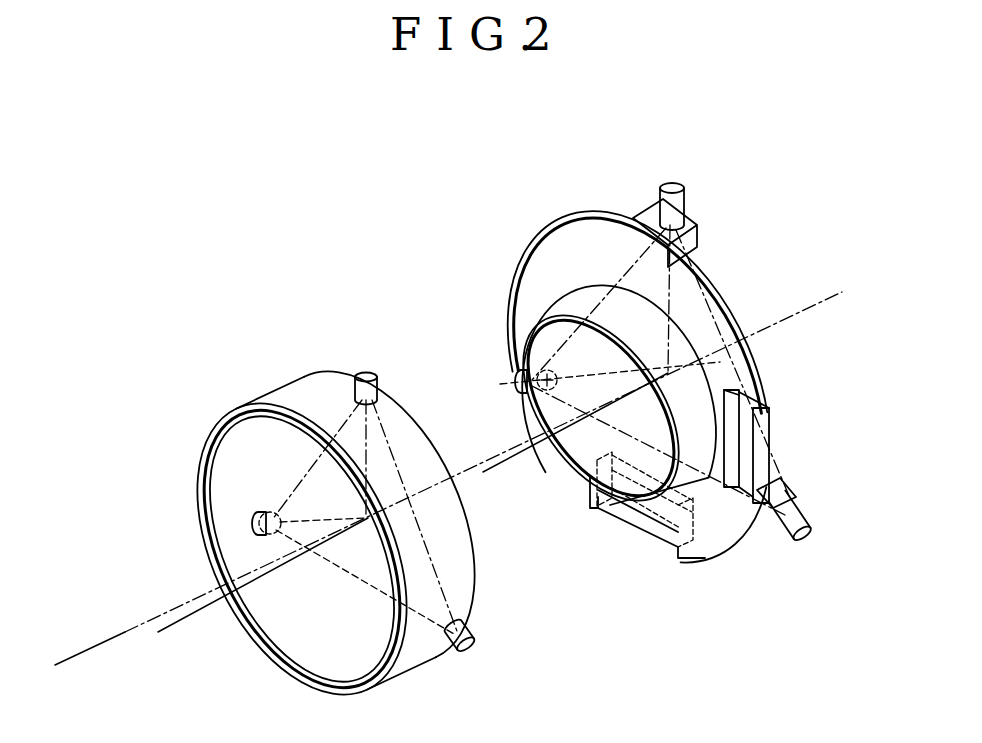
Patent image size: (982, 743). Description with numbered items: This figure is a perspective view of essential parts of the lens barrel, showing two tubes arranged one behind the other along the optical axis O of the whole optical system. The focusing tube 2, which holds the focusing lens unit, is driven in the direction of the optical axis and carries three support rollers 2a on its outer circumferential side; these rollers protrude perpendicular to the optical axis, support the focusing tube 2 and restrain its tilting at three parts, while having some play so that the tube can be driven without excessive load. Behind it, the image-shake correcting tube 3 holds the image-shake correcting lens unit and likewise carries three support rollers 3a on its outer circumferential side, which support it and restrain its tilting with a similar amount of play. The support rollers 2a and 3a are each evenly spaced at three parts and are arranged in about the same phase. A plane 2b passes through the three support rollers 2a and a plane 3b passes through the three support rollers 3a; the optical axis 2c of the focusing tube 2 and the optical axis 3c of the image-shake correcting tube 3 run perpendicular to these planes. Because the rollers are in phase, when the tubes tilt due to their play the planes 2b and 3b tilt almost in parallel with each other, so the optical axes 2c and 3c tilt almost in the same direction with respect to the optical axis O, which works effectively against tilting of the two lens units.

The optical axis of the whole optical system O is at (123, 634).
The focusing tube 2 is at (339, 518).
The support rollers 2a is at (366, 374).
The plane 2b is at (413, 545).
The optical axis of the focusing tube 2c is at (178, 628).
The image-shake correcting tube 3 is at (669, 365).
The support rollers 3a is at (676, 182).
The plane 3b is at (706, 336).
The optical axis of the image-shake correcting tube 3c is at (523, 453).